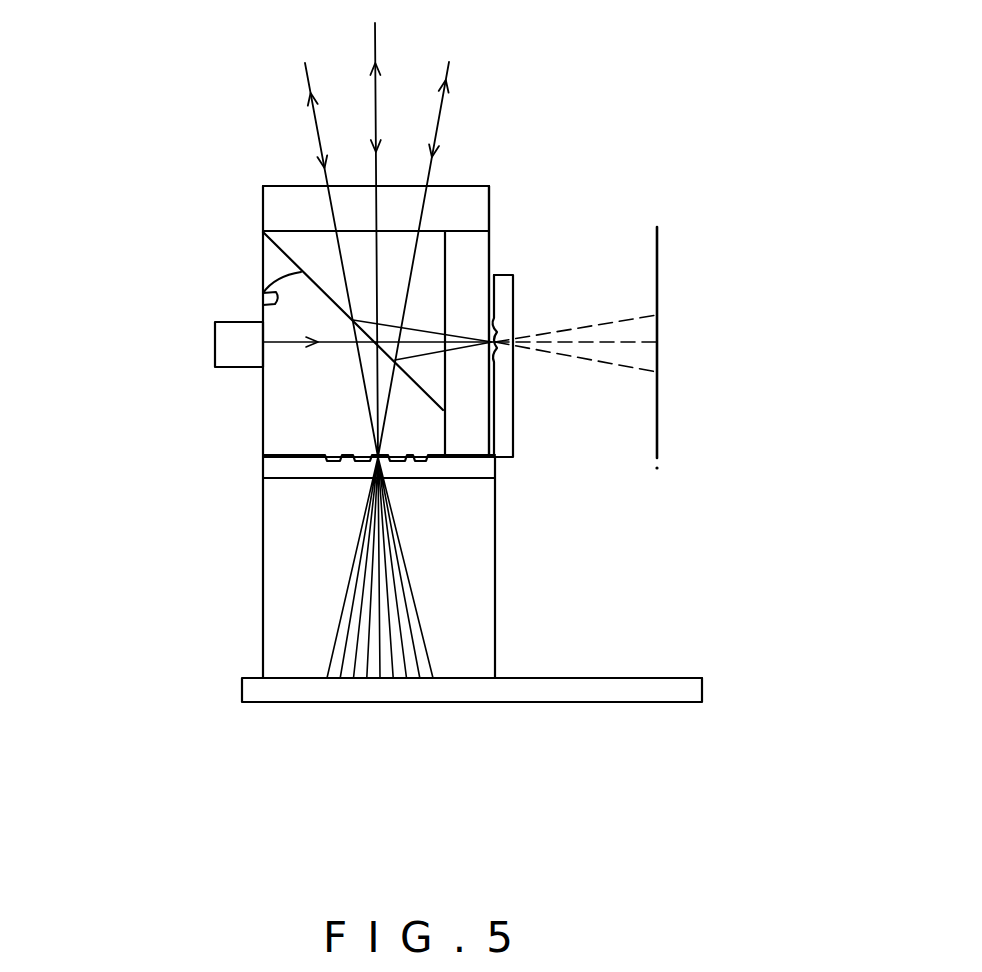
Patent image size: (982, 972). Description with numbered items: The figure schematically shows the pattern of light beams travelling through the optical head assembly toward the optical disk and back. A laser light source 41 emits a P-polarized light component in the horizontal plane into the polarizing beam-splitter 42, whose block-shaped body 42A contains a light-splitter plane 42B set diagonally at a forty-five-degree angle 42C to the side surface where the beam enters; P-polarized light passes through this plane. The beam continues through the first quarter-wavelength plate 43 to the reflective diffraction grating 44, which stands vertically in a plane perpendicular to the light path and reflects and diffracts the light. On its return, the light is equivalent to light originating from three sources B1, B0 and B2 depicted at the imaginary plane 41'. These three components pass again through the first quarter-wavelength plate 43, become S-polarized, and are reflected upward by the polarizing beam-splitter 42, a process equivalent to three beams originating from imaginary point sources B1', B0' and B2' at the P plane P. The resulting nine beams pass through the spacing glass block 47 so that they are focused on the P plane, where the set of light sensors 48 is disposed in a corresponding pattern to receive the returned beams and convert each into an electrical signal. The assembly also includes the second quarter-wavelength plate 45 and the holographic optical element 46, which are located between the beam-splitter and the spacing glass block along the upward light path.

The laser light source 41 is at (293, 300).
The imaginary plane 41' is at (659, 323).
The polarizing beam-splitter 42 is at (282, 412).
The block-shaped body 42A is at (258, 248).
The light-splitter plane 42B is at (287, 232).
The 45-degree angle 42C is at (263, 305).
The first quarter-wavelength plate 43 is at (492, 255).
The reflective diffraction grating 44 is at (513, 455).
The second quarter-wavelength plate 45 is at (261, 186).
The holographic optical element 46 is at (263, 478).
The spacing glass block 47 is at (263, 610).
The set of light sensors 48 is at (613, 702).
The P plane P is at (669, 672).
The light source B1 is at (602, 313).
The light source B0 is at (602, 347).
The light source B2 is at (602, 377).
The imaginary point source B1' is at (330, 627).
The imaginary point source B0' is at (395, 627).
The imaginary point source B2' is at (445, 627).